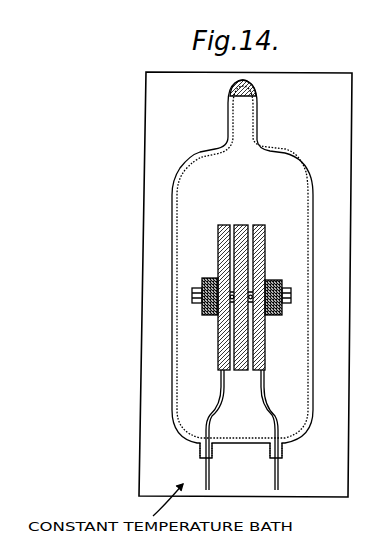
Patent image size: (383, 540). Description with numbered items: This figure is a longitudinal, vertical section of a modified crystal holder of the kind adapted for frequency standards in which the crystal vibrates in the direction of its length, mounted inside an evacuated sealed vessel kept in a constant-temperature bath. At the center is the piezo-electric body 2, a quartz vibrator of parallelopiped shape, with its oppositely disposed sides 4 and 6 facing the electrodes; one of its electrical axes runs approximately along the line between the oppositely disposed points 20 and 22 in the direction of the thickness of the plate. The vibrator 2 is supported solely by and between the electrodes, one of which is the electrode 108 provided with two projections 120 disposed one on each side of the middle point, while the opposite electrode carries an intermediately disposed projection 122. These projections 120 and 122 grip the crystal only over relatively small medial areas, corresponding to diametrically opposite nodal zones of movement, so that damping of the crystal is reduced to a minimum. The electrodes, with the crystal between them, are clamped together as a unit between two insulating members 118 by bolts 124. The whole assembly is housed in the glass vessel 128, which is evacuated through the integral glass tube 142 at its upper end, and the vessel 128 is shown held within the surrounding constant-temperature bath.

The piezo-electric body 2 is at (244, 225).
The side of the crystal 4 is at (232, 243).
The side of the crystal 6 is at (251, 243).
The nodal point 20 is at (219, 336).
The nodal point 22 is at (258, 290).
The electrode 108 is at (263, 356).
The insulating member 118 is at (282, 315).
The projection 120 is at (255, 280).
The projection 122 is at (228, 306).
The bolt 124 is at (197, 287).
The glass vessel 128 is at (304, 157).
The integral glass tube 142 is at (253, 100).